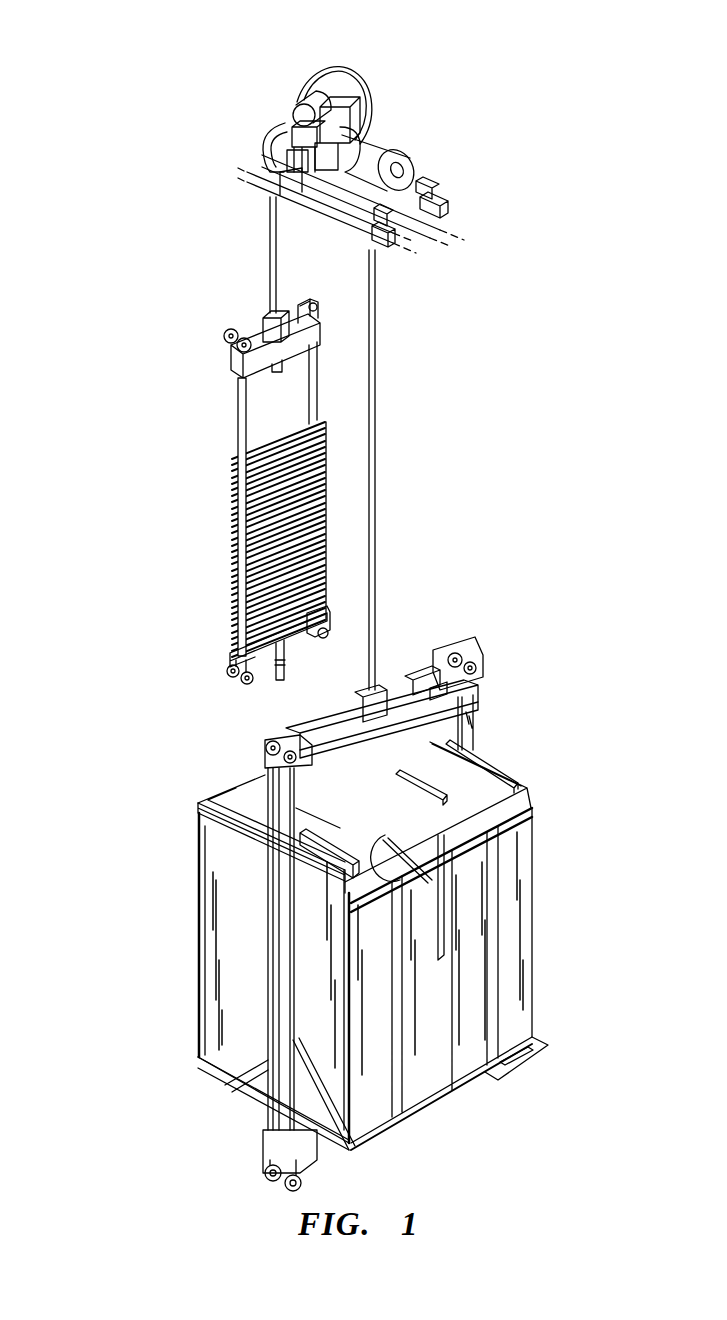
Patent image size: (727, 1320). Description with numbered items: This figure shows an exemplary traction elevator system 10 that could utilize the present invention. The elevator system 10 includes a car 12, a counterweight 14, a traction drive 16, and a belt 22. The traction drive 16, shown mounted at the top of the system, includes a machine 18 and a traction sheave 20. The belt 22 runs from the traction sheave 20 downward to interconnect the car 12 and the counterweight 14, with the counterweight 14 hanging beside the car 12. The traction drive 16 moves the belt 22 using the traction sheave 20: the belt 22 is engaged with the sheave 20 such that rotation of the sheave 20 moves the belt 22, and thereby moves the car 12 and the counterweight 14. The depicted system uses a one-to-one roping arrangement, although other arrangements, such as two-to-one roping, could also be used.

The traction elevator system 10 is at (331, 603).
The car 12 is at (510, 918).
The counterweight 14 is at (302, 557).
The traction drive 16 is at (355, 134).
The machine 18 is at (372, 143).
The traction sheave 20 is at (355, 86).
The belt 22 is at (373, 370).